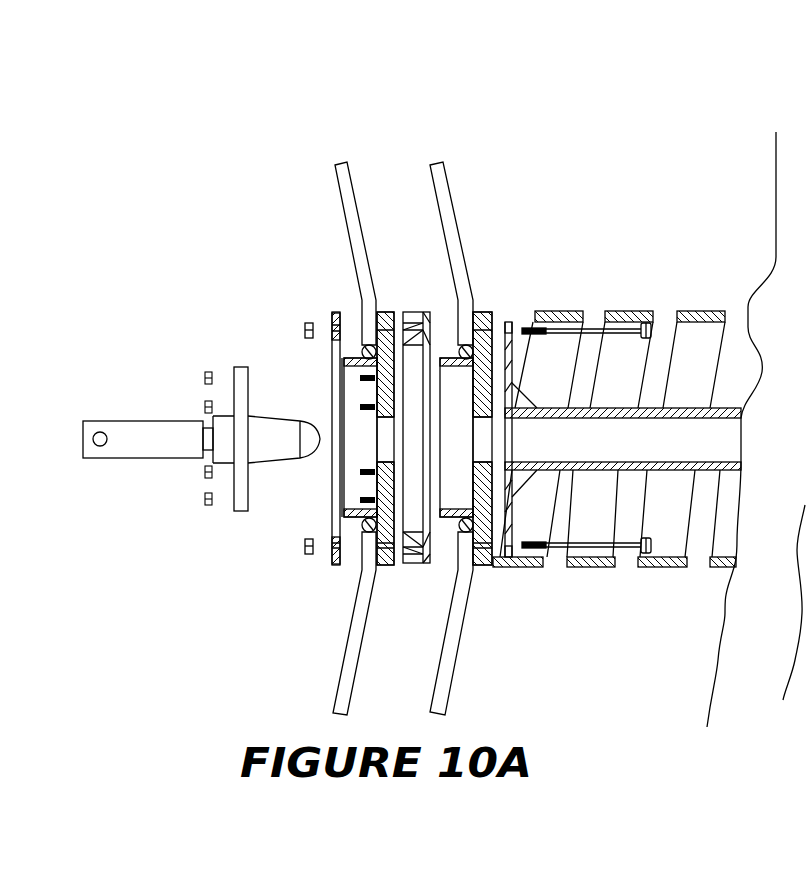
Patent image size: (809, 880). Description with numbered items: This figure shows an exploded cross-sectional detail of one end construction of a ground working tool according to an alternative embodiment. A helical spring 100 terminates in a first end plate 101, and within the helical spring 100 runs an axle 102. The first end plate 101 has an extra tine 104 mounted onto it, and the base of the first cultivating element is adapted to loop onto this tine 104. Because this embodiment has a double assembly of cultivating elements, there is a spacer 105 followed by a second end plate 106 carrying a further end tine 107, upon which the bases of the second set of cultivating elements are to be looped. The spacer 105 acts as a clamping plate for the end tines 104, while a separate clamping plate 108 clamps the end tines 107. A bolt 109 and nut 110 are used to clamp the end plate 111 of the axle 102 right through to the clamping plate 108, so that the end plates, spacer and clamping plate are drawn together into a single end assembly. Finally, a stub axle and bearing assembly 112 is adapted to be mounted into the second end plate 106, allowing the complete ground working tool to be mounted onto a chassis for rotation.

The helical spring 100 is at (615, 358).
The first end plate 101 is at (483, 518).
The axle 102 is at (628, 462).
The tine 104 is at (448, 207).
The spacer 105 is at (412, 563).
The second end plate 106 is at (387, 318).
The end tine 107 is at (350, 168).
The clamping plate 108 is at (332, 310).
The bolt 109 is at (550, 323).
The nut 110 is at (305, 330).
The end plate 111 is at (510, 322).
The stub axle and bearing assembly 112 is at (177, 443).